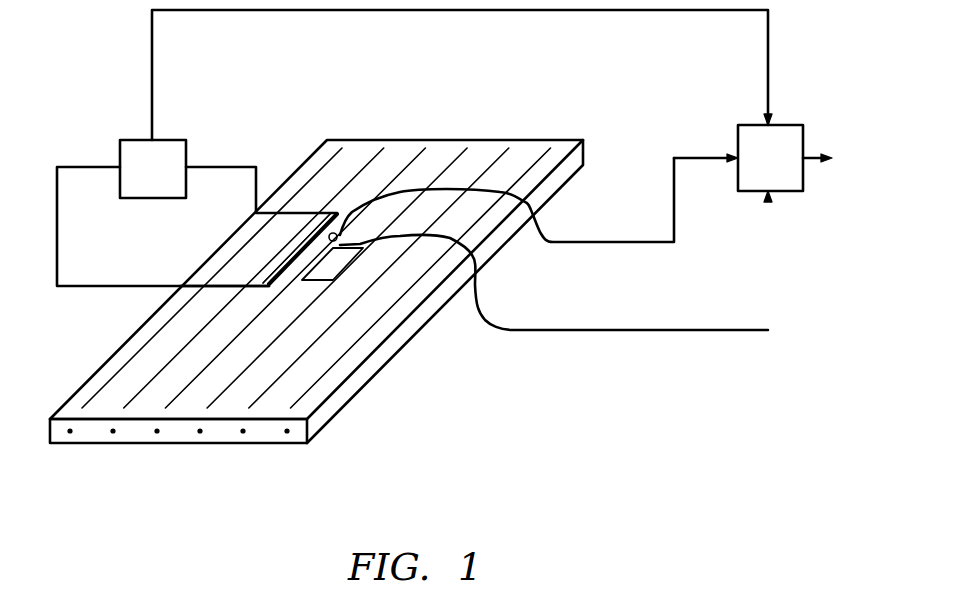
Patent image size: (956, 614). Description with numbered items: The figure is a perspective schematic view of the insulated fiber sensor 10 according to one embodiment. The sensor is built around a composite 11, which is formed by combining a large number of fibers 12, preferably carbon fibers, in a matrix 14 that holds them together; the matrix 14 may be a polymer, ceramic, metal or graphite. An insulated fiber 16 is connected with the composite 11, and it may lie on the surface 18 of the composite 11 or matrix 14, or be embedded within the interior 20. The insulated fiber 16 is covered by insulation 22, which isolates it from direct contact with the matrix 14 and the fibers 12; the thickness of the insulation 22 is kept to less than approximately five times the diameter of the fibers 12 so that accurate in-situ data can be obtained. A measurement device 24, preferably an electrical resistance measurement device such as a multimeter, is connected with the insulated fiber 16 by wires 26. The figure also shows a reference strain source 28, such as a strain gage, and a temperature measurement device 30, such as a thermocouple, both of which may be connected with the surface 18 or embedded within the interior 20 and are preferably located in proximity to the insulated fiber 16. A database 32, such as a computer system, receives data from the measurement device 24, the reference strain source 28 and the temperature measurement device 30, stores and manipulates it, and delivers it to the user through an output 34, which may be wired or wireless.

The insulated fiber sensor 10 is at (586, 460).
The composite 11 is at (224, 456).
The fiber 12 is at (125, 370).
The matrix 14 is at (497, 150).
The insulated fiber 16 is at (273, 268).
The surface 18 is at (447, 170).
The interior 20 is at (96, 447).
The insulation 22 is at (270, 282).
The measurement device 24 is at (120, 148).
The wires 26 is at (290, 210).
The reference strain source 28 is at (337, 273).
The temperature measurement device 30 is at (338, 233).
The database 32 is at (795, 124).
The output 34 is at (808, 157).